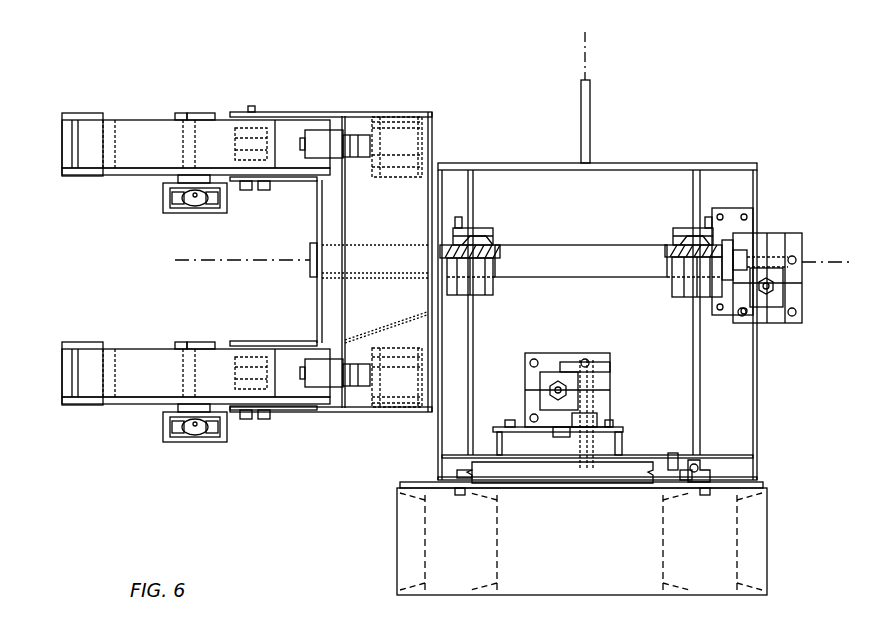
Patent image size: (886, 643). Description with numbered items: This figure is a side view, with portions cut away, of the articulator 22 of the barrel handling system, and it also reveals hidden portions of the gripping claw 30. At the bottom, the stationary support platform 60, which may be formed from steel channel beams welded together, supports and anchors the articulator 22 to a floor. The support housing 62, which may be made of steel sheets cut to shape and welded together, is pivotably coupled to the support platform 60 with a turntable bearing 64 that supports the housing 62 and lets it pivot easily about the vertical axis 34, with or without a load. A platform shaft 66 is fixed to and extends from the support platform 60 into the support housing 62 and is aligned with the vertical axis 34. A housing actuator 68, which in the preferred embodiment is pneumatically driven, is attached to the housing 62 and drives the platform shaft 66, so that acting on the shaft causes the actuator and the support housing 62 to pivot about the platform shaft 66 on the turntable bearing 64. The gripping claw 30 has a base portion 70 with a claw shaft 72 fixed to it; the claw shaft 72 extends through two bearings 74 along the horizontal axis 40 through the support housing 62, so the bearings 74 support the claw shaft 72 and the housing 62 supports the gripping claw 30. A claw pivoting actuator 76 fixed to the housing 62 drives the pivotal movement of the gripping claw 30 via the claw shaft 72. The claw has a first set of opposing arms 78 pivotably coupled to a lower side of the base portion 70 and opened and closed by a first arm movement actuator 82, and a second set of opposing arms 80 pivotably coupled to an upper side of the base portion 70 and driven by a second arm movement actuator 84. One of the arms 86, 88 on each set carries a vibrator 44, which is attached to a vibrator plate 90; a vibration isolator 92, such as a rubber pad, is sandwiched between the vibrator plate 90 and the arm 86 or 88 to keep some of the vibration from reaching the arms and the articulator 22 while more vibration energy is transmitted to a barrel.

The articulator 22 is at (754, 106).
The gripping claw 30 is at (268, 104).
The vertical axis 34 is at (590, 58).
The horizontal axis 40 is at (258, 258).
The vibrator 44 is at (190, 199).
The stationary support platform 60 is at (578, 572).
The support housing 62 is at (665, 163).
The turntable bearing 64 is at (700, 458).
The platform shaft 66 is at (628, 457).
The housing actuator 68 is at (590, 353).
The base portion 70 is at (358, 112).
The claw shaft 72 is at (582, 245).
The bearings 74 is at (498, 232).
The claw pivoting actuator 76 is at (778, 236).
The first set of opposing arms 78 is at (196, 367).
The second set of opposing arms 80 is at (60, 138).
The first arm movement actuator 82 is at (395, 411).
The second arm movement actuator 84 is at (402, 117).
The arm 86 is at (196, 432).
The arm 88 is at (136, 172).
The vibrator plate 90 is at (178, 113).
The vibration isolator 92 is at (190, 113).